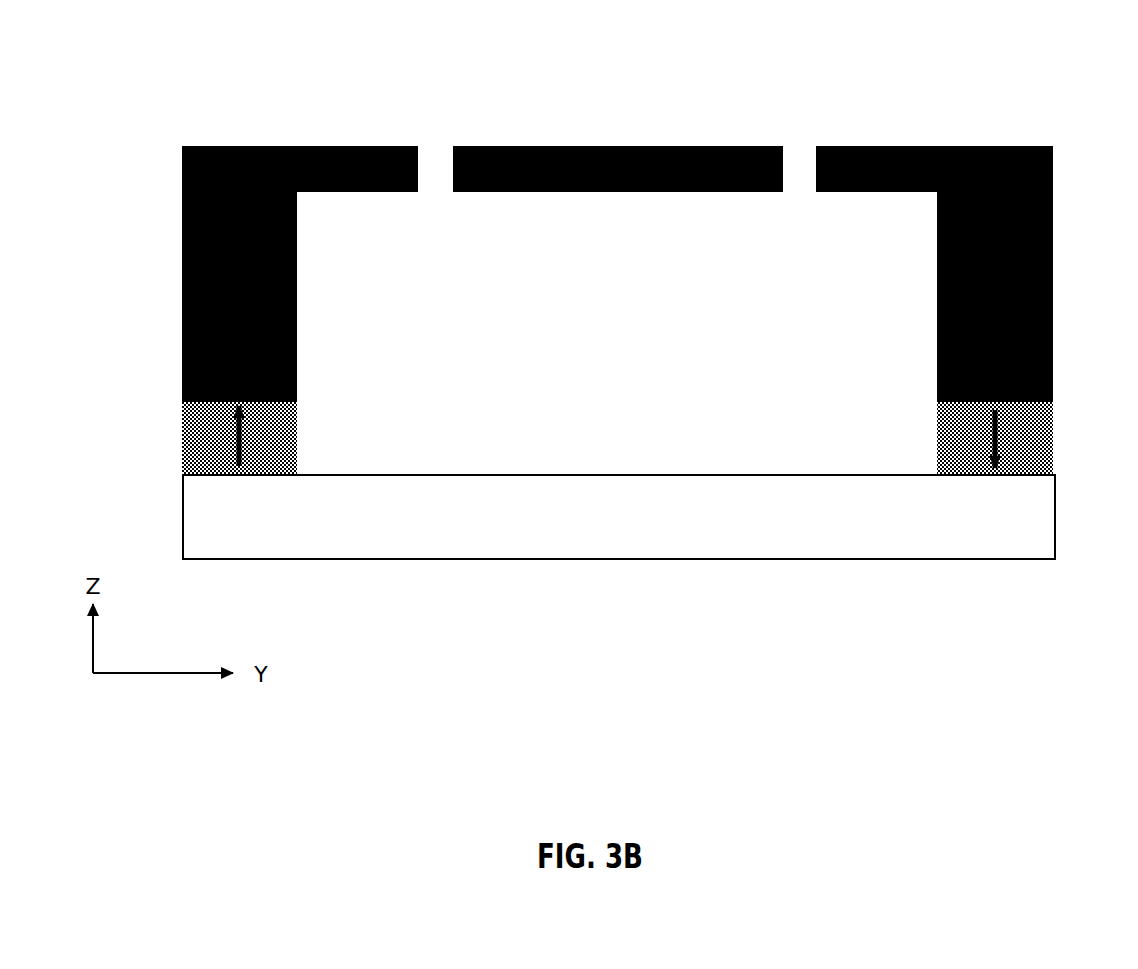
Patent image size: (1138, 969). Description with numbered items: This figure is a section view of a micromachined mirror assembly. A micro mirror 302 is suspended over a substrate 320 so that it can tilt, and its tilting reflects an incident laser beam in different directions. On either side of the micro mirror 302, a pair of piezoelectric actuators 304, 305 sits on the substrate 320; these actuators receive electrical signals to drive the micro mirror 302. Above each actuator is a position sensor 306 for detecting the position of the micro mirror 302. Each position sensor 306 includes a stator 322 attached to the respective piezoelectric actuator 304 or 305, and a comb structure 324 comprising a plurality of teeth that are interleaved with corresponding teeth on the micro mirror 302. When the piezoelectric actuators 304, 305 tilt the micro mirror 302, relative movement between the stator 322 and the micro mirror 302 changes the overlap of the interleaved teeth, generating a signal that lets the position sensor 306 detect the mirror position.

The micro mirror 302 is at (592, 135).
The piezoelectric actuator 304 is at (180, 440).
The piezoelectric actuator 305 is at (928, 438).
The position sensor 306 is at (622, 215).
The substrate 320 is at (619, 517).
The stator 322 is at (180, 240).
The comb structure 324 is at (372, 142).